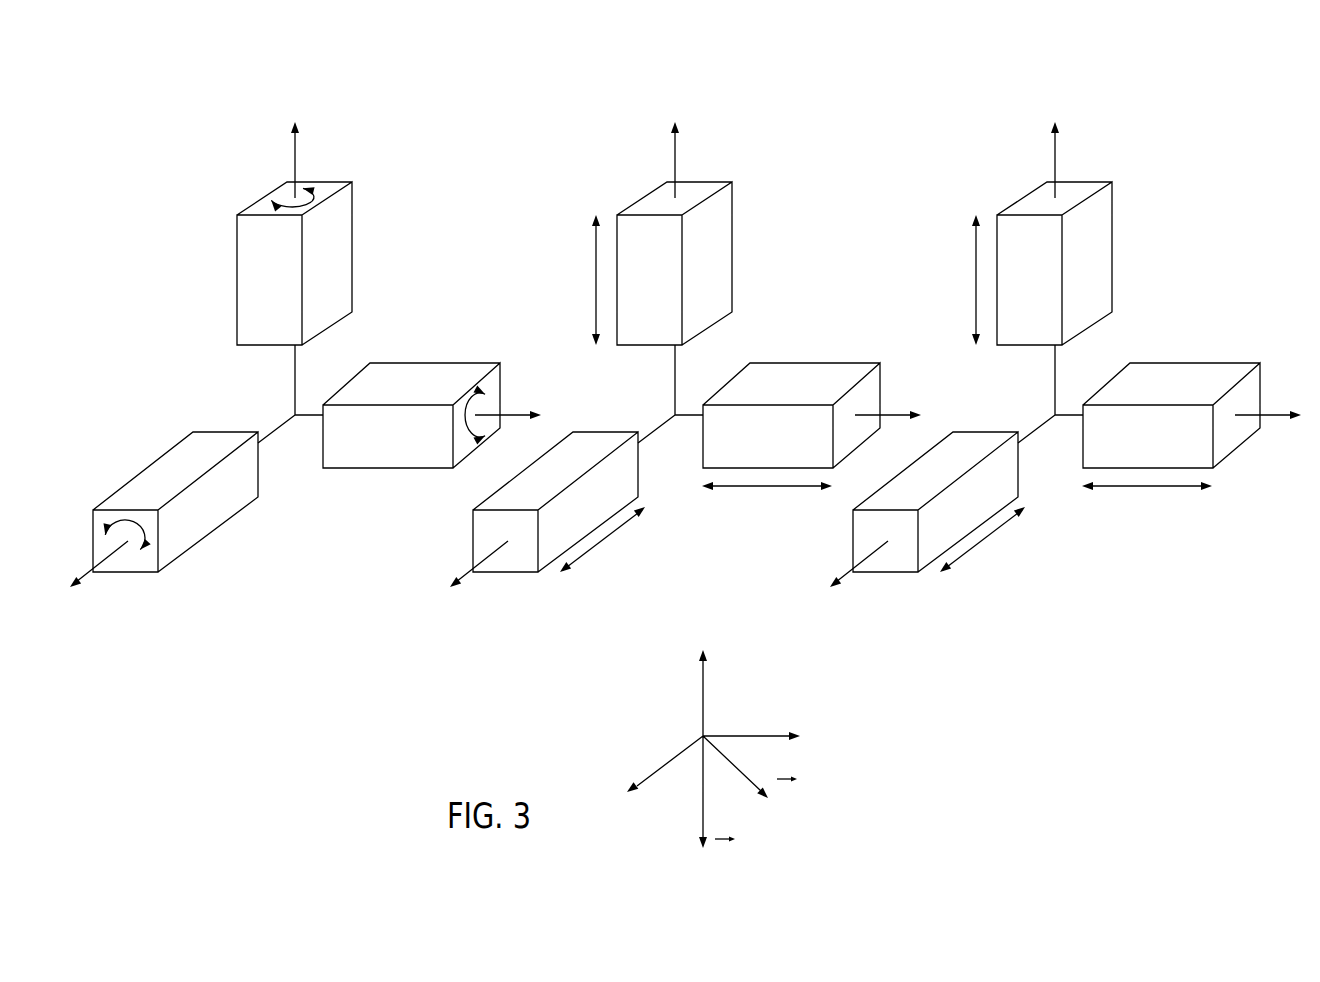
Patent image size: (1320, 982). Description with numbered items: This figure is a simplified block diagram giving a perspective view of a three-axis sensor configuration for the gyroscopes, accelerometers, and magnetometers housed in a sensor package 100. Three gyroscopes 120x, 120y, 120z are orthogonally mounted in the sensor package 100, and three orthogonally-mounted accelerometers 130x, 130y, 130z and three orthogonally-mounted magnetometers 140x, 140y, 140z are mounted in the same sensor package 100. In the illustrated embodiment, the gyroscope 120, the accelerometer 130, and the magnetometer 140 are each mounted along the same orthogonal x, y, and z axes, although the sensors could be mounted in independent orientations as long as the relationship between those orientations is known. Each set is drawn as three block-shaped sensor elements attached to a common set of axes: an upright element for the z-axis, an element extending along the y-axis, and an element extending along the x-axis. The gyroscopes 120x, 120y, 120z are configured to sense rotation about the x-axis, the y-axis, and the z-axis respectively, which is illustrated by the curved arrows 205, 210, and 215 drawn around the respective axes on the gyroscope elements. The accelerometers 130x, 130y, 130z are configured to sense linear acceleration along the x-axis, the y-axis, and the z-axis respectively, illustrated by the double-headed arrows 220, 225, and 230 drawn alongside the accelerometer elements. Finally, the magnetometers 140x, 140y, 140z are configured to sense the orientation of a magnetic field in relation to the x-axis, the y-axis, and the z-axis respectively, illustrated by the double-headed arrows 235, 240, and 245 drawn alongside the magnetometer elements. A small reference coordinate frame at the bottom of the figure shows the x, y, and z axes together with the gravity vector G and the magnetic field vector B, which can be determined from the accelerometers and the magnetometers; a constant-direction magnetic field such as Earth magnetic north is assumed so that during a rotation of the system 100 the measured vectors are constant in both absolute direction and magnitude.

The sensor package 100 is at (1182, 104).
The gyroscope 120 is at (168, 194).
The x-axis gyroscope 120x is at (148, 565).
The y-axis gyroscope 120y is at (443, 368).
The z-axis gyroscope 120z is at (352, 250).
The accelerometer 130 is at (548, 194).
The x-axis accelerometer 130x is at (525, 565).
The y-axis accelerometer 130y is at (823, 368).
The z-axis accelerometer 130z is at (732, 258).
The magnetometer 140 is at (928, 194).
The x-axis magnetometer 140x is at (905, 565).
The y-axis magnetometer 140y is at (1203, 368).
The z-axis magnetometer 140z is at (1112, 258).
The rotation arrow about x-axis 205 is at (113, 525).
The rotation arrow about y-axis 210 is at (490, 393).
The rotation arrow about z-axis 215 is at (270, 191).
The x-axis linear acceleration arrow 220 is at (603, 540).
The y-axis linear acceleration arrow 225 is at (766, 493).
The z-axis linear acceleration arrow 230 is at (593, 280).
The x-axis magnetic field orientation arrow 235 is at (983, 540).
The y-axis magnetic field orientation arrow 240 is at (1146, 493).
The z-axis magnetic field orientation arrow 245 is at (973, 280).